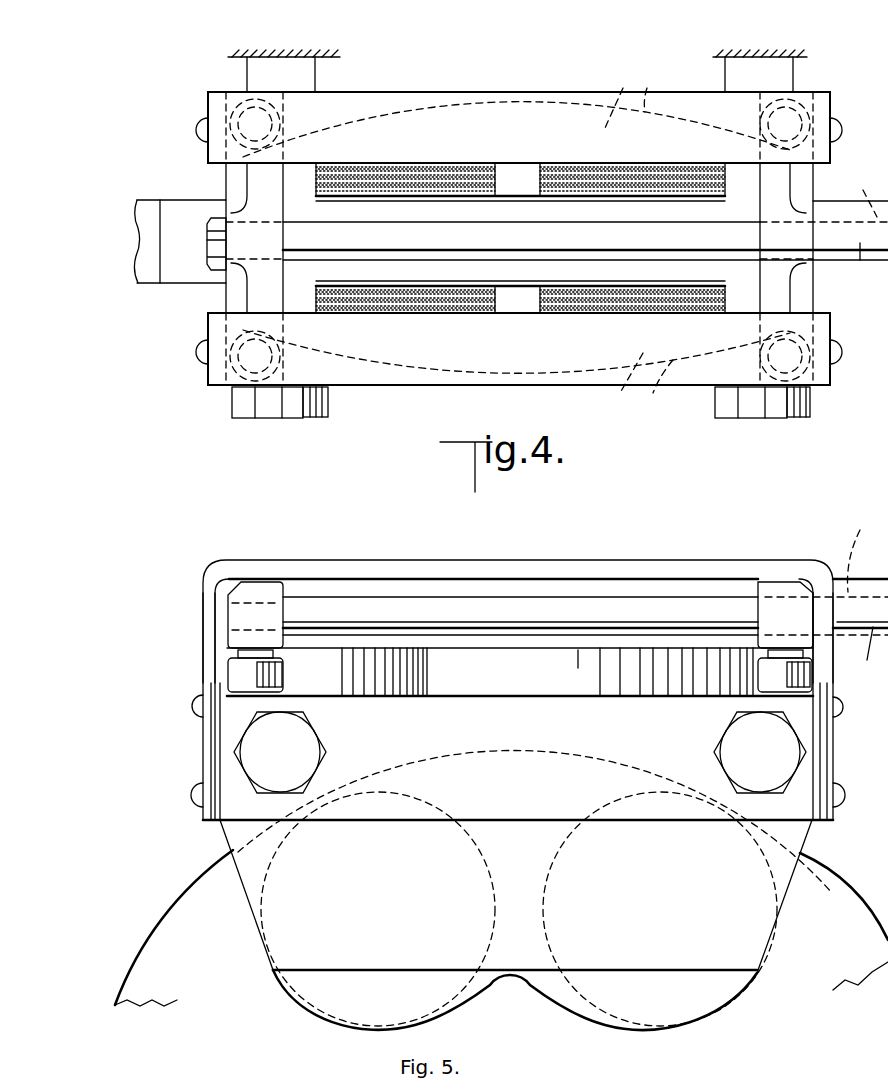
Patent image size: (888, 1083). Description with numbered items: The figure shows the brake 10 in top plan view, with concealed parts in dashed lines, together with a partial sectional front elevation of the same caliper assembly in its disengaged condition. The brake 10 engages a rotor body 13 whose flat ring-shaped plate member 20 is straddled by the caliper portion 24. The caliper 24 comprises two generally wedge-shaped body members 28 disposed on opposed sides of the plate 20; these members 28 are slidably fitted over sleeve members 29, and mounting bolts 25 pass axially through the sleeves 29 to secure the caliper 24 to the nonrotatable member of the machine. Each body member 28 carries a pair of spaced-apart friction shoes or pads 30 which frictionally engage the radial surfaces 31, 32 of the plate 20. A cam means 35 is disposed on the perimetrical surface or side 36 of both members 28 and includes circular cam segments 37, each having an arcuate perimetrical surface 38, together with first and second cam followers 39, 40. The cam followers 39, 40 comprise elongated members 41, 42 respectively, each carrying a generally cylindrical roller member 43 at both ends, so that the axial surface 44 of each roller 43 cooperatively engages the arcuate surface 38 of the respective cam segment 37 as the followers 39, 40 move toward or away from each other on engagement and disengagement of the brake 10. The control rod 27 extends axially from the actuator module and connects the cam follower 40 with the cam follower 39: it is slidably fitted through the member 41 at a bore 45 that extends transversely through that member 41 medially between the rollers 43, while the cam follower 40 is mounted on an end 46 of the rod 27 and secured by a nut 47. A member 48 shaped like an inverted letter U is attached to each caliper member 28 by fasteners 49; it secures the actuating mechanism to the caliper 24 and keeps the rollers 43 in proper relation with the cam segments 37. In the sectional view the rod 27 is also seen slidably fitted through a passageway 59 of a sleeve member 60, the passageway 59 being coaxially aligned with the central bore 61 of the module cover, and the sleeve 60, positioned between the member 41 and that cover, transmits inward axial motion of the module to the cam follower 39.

In FIG. 4, the brake 10 is at (126, 375).
In FIG. 5, the brake 10 is at (180, 546).
In FIG. 5, the rotor body 13 is at (168, 910).
In FIG. 4, the plate member 20 is at (140, 232).
In FIG. 5, the plate member 20 is at (153, 947).
In FIG. 4, the caliper portion 24 is at (400, 402).
In FIG. 5, the caliper portion 24 is at (250, 922).
In FIG. 4, the bolts 25 is at (243, 418).
In FIG. 5, the bolts 25 is at (260, 773).
In FIG. 4, the control rod 27 is at (453, 230).
In FIG. 5, the control rod 27 is at (492, 605).
In FIG. 5, the body members 28 is at (515, 950).
In FIG. 4, the sleeve members 29 is at (306, 78).
In FIG. 4, the friction shoes or pads 30 is at (557, 173).
In FIG. 5, the friction shoes or pads 30 is at (290, 948).
In FIG. 4, the radial surface 31 is at (160, 201).
In FIG. 4, the radial surface 32 is at (137, 285).
In FIG. 4, the cam means 35 is at (137, 318).
In FIG. 5, the cam means 35 is at (352, 588).
In FIG. 5, the perimetrical surface or side 36 is at (540, 692).
In FIG. 4, the circular cam segments 37 is at (623, 86).
In FIG. 5, the circular cam segments 37 is at (407, 650).
In FIG. 4, the arcuate perimetrical surface 38 is at (654, 245).
In FIG. 5, the arcuate perimetrical surface 38 is at (415, 687).
In FIG. 4, the first cam follower 39 is at (800, 300).
In FIG. 5, the first cam follower 39 is at (829, 553).
In FIG. 4, the second cam follower 40 is at (240, 287).
In FIG. 5, the second cam follower 40 is at (212, 585).
In FIG. 4, the elongated member 41 is at (800, 175).
In FIG. 5, the elongated member 41 is at (780, 590).
In FIG. 4, the elongated member 42 is at (253, 177).
In FIG. 5, the elongated member 42 is at (255, 592).
In FIG. 4, the cam roller member 43 is at (333, 120).
In FIG. 5, the cam roller member 43 is at (329, 680).
In FIG. 4, the axial surface 44 is at (238, 106).
In FIG. 5, the axial surface 44 is at (240, 667).
In FIG. 4, the bore 45 is at (815, 195).
In FIG. 5, the bore 45 is at (773, 588).
In FIG. 4, the end of rod 46 is at (213, 198).
In FIG. 4, the nut 47 is at (212, 248).
In FIG. 4, the member 48 is at (465, 78).
In FIG. 5, the member 48 is at (388, 563).
In FIG. 4, the fasteners 49 is at (197, 130).
In FIG. 5, the fasteners 49 is at (198, 790).
In FIG. 4, the passageway 59 is at (875, 195).
In FIG. 5, the passageway 59 is at (868, 547).
In FIG. 4, the sleeve member 60 is at (860, 260).
In FIG. 5, the sleeve member 60 is at (887, 680).
In FIG. 5, the central bore 61 is at (879, 542).